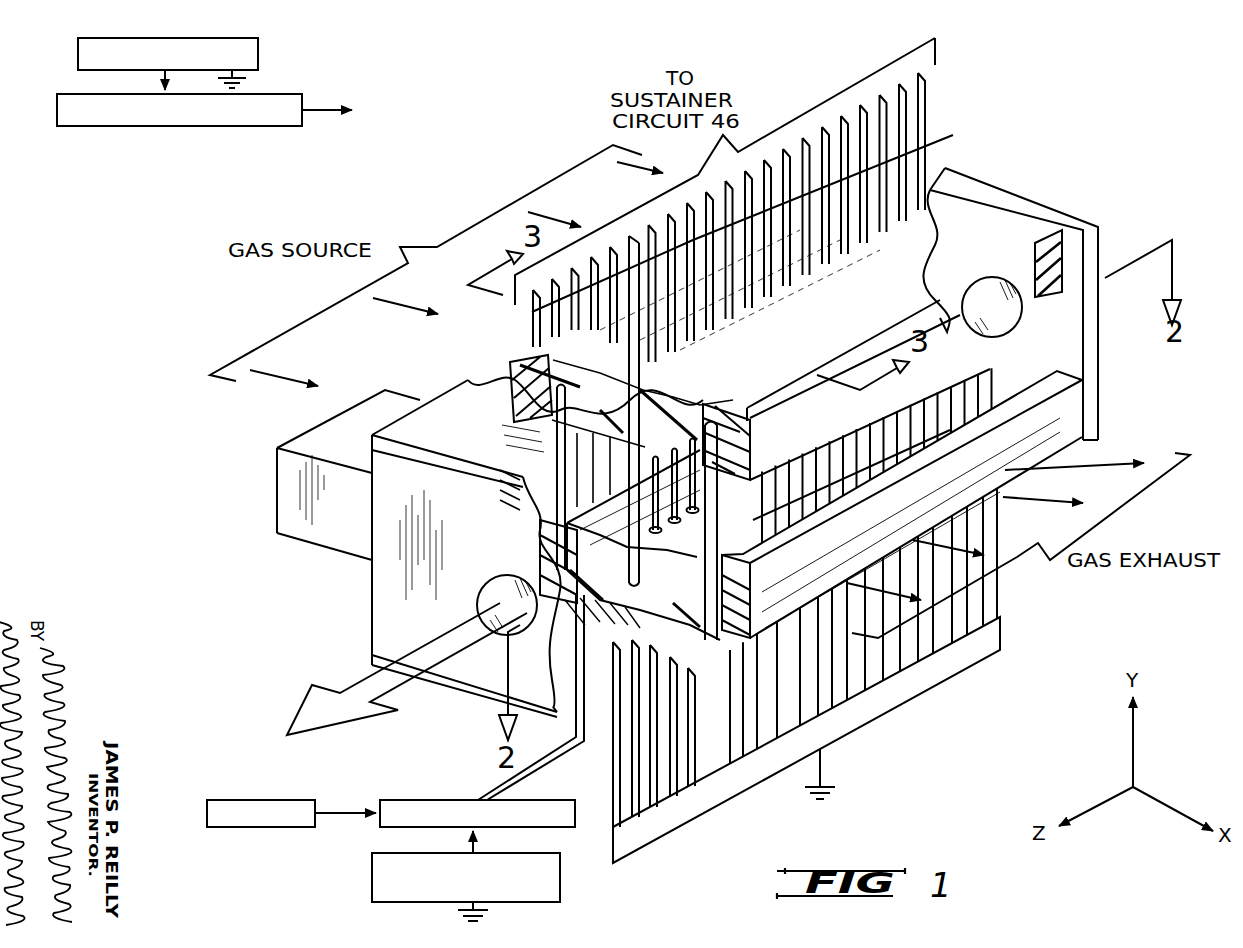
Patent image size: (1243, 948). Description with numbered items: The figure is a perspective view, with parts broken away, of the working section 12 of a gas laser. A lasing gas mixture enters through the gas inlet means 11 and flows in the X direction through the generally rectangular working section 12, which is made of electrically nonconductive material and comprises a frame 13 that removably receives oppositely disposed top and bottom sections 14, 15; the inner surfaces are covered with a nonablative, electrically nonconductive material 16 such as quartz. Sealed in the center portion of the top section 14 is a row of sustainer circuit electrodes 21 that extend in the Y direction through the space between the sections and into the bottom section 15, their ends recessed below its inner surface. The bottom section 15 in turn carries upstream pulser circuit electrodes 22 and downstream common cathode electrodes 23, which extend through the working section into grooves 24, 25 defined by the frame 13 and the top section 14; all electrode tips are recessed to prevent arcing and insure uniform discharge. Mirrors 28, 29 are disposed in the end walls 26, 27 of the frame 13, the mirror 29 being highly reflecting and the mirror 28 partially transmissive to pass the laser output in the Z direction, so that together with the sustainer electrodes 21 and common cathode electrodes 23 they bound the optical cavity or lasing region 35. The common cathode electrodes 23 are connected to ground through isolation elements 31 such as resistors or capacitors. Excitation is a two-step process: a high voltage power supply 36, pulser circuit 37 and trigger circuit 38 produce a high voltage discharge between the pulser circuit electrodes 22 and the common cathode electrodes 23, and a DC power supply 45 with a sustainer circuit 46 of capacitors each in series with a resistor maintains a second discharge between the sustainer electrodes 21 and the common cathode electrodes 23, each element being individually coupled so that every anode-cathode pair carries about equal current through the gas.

The gas inlet means 11 is at (277, 495).
The working section 12 is at (270, 586).
The frame 13 is at (385, 607).
The top section 14 is at (799, 348).
The bottom section 15 is at (608, 583).
The nonablative electrically nonconductive material 16 is at (598, 430).
The sustainer circuit electrodes 21 is at (533, 328).
The pulser circuit electrodes 22 is at (545, 510).
The common cathode electrodes 23 is at (670, 708).
The groove 24 is at (559, 380).
The groove 25 is at (697, 410).
The end wall 26 is at (372, 568).
The end wall 27 is at (1098, 297).
The mirror 28 is at (497, 578).
The mirror 29 is at (993, 278).
The isolation elements 31 is at (930, 688).
The lasing region 35 is at (680, 530).
The high voltage power supply 36 is at (372, 882).
The pulser circuit 37 is at (575, 827).
The trigger circuit 38 is at (264, 827).
The DC power supply 45 is at (78, 54).
The sustainer circuit 46 is at (57, 110).